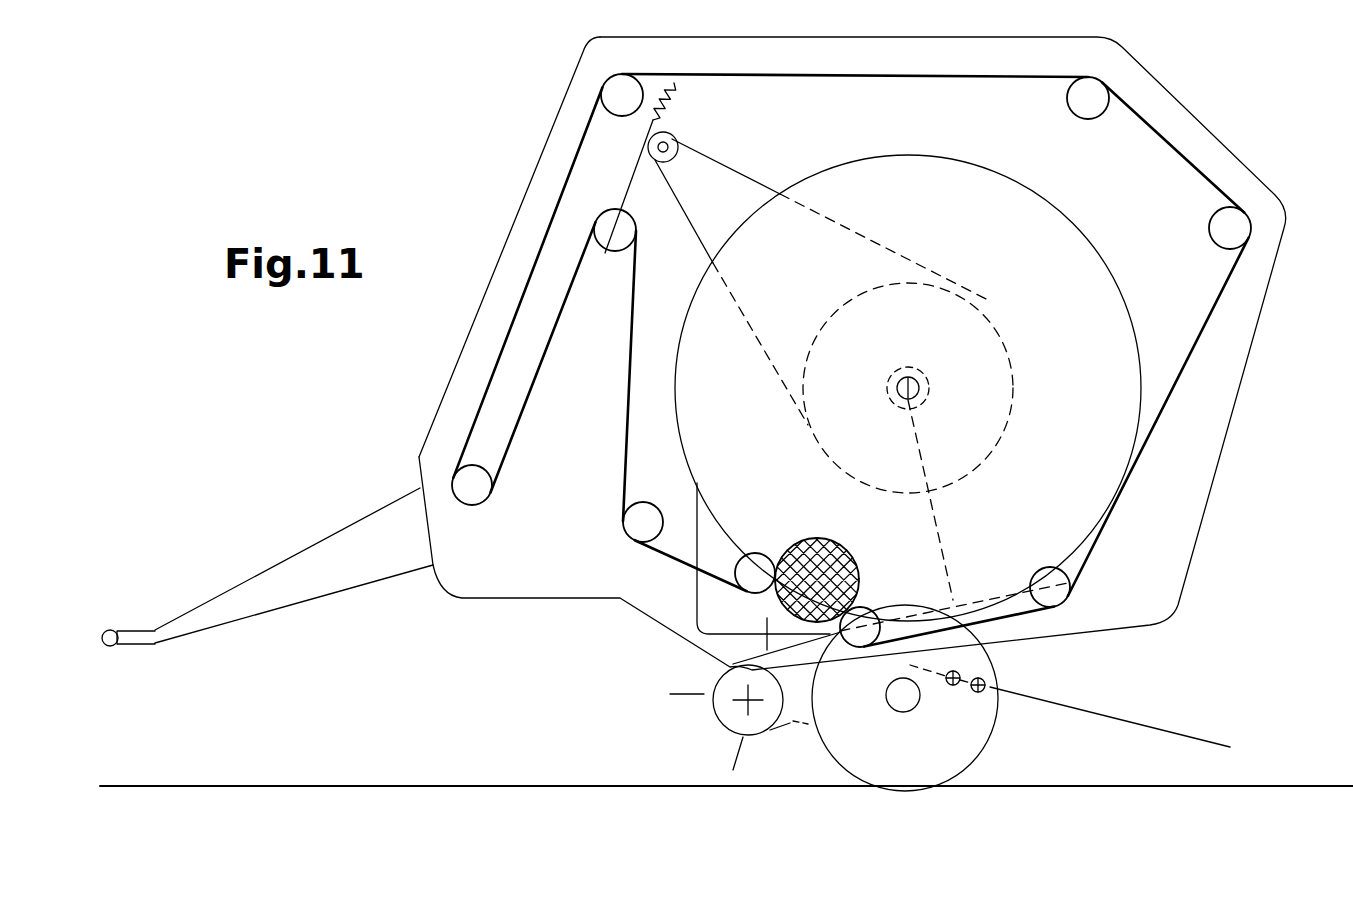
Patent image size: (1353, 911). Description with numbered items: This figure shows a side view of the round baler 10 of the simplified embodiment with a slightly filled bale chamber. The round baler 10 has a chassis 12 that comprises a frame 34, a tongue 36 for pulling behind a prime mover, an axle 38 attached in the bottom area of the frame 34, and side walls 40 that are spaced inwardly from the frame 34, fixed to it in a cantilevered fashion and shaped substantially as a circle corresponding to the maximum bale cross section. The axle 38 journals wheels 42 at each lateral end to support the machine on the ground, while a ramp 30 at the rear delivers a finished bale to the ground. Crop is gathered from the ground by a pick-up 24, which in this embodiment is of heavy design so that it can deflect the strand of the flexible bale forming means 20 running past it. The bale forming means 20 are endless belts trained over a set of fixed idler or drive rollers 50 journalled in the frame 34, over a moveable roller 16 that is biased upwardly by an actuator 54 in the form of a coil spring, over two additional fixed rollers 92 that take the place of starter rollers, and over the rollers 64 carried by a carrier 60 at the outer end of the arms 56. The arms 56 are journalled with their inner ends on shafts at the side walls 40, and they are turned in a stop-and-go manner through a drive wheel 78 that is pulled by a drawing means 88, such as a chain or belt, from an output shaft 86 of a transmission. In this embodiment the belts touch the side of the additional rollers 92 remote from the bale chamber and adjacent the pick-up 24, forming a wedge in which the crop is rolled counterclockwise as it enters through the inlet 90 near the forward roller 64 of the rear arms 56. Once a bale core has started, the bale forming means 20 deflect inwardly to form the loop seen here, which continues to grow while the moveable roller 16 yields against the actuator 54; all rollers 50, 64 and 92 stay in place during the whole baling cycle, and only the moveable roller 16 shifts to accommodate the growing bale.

The round baler 10 is at (301, 109).
The chassis 12 is at (433, 342).
The moveable roller 16 is at (620, 250).
The flexible bale forming means 20 is at (538, 372).
The pick-up 24 is at (718, 723).
The ramp 30 is at (1107, 715).
The frame 34 is at (448, 412).
The tongue 36 is at (308, 548).
The axle 38 is at (905, 708).
The side walls 40 is at (941, 230).
The wheels 42 is at (982, 734).
The idler or drive rollers 50 is at (622, 80).
The actuator 54 is at (676, 82).
The arms 56 is at (944, 509).
The carrier 60 is at (998, 601).
The rollers 64 is at (858, 610).
The drive wheel 78 is at (978, 322).
The output shaft 86 is at (668, 144).
The drawing means 88 is at (744, 173).
The inlet 90 is at (749, 611).
The additional fixed rollers 92 is at (653, 530).